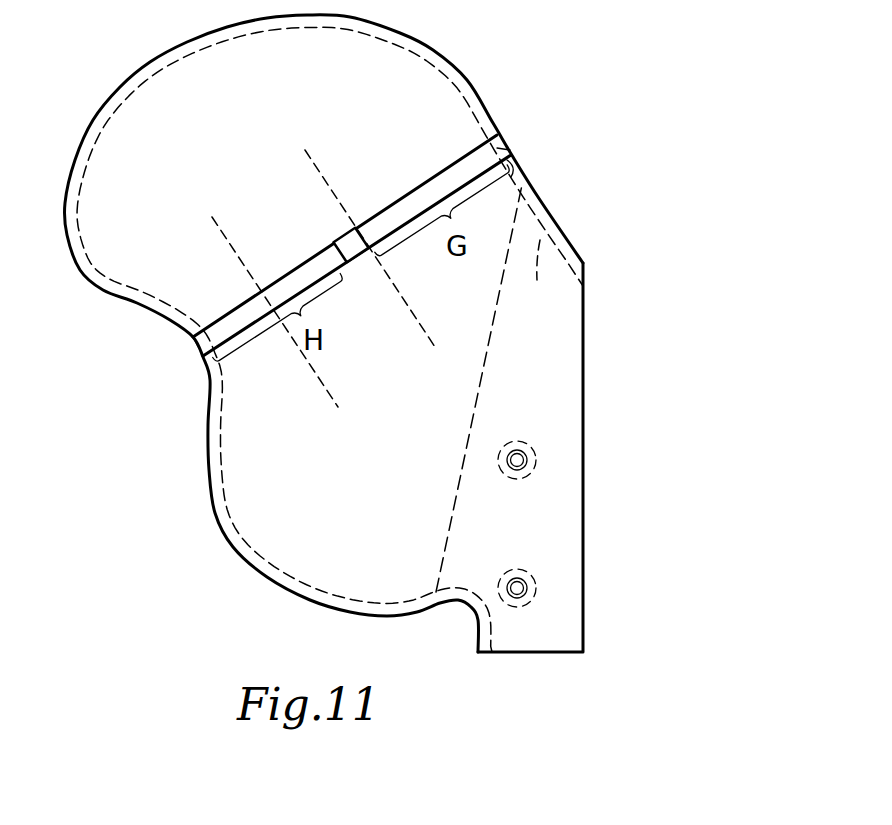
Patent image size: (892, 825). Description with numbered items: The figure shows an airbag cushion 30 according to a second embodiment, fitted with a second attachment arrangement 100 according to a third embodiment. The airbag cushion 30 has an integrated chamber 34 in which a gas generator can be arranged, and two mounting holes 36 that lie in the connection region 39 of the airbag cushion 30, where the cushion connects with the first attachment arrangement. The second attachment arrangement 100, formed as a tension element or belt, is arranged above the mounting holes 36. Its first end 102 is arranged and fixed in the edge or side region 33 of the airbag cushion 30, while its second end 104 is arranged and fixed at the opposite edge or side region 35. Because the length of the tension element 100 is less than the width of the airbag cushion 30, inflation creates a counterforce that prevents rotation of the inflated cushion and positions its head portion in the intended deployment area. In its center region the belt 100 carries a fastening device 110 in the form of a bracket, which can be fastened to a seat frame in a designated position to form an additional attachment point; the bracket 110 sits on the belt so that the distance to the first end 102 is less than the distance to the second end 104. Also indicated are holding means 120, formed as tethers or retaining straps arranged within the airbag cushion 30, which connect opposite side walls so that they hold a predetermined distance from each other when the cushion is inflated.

The airbag cushion 30 is at (434, 33).
The side region 33 is at (540, 240).
The integrated chamber 34 is at (549, 397).
The side region 35 is at (137, 298).
The mounting holes 36 is at (518, 586).
The connection region 39 is at (556, 503).
The second attachment arrangement 100 is at (441, 172).
The first end 102 is at (497, 148).
The second end 104 is at (203, 354).
The fastening device 110 is at (346, 231).
The holding means 120 is at (313, 164).